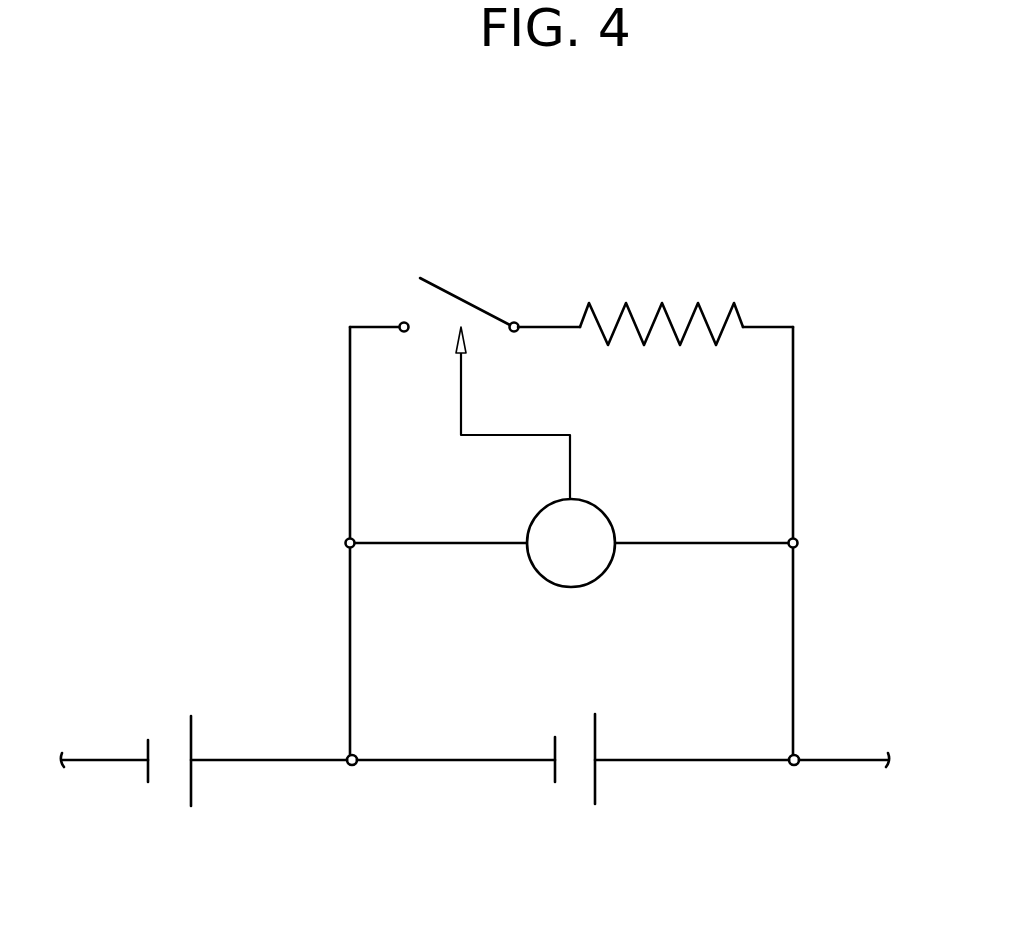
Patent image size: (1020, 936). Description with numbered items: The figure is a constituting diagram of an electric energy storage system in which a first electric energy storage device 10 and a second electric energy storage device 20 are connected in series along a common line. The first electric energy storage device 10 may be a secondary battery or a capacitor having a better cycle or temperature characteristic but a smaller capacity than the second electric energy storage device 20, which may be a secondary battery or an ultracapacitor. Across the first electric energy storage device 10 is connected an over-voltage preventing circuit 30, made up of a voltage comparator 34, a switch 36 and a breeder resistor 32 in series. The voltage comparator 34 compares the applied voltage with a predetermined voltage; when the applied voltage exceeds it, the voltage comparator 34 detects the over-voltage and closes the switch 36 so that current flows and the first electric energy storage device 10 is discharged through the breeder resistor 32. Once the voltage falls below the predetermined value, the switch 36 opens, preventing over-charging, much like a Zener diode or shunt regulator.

The first electric energy storage device 10 is at (577, 802).
The second electric energy storage device 20 is at (171, 805).
The over-voltage preventing circuit 30 is at (822, 304).
The breeder resistor 32 is at (638, 318).
The voltage comparator 34 is at (602, 508).
The switch 36 is at (458, 297).